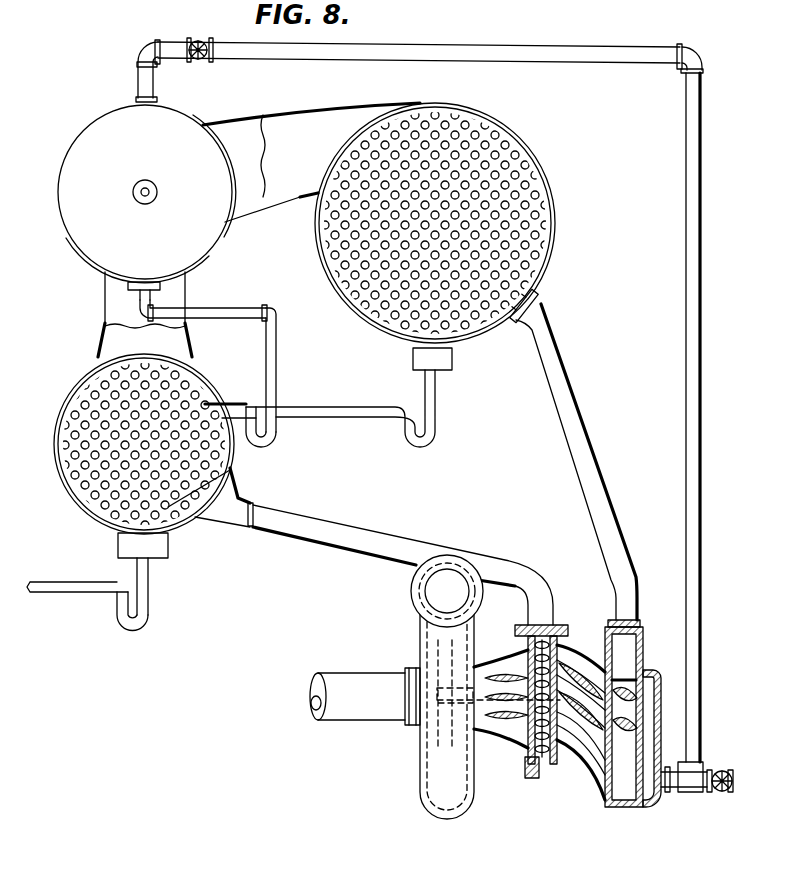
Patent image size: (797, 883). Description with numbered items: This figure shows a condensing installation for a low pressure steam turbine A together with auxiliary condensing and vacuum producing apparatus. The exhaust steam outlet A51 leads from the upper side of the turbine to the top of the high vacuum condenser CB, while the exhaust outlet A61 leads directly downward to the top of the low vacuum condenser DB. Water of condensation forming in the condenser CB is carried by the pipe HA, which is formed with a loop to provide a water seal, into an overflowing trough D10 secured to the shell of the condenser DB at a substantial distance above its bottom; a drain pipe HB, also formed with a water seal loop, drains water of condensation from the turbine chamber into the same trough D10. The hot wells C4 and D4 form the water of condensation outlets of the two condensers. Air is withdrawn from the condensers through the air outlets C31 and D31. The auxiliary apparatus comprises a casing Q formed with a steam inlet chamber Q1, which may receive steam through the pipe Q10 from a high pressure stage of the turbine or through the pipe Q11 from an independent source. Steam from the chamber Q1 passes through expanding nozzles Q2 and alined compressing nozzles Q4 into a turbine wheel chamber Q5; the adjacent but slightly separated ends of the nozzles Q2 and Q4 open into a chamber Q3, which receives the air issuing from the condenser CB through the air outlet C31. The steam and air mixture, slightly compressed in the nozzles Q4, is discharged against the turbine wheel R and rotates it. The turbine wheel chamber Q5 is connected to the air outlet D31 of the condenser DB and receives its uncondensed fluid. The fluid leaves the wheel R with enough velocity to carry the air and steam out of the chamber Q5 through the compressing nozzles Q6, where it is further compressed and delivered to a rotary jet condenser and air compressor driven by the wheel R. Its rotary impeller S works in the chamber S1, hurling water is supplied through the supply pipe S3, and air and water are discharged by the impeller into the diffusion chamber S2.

The low pressure steam turbine A is at (147, 194).
The exhaust steam outlet A51 is at (311, 162).
The exhaust outlet A61 is at (127, 340).
The condenser CB is at (553, 218).
The air outlet C31 is at (543, 312).
The hot well C4 is at (413, 356).
The condenser DB is at (53, 437).
The overflowing trough D10 is at (205, 396).
The air outlet D31 is at (226, 493).
The hot well D4 is at (118, 580).
The pipe HA is at (337, 420).
The drain pipe HB is at (277, 365).
The pipe Q10 is at (685, 517).
The turbine wheel chamber Q5 is at (553, 646).
The chamber Q3 is at (630, 650).
The steam inlet chamber Q1 is at (653, 793).
The casing Q is at (612, 807).
The expanding nozzles Q2 is at (613, 753).
The compressing nozzles Q4 is at (583, 740).
The compressing nozzles Q6 is at (502, 728).
The pipe Q11 is at (707, 793).
The turbine wheel R is at (543, 767).
The rotary impeller S is at (437, 740).
The chamber S1 is at (454, 655).
The diffusion chamber S2 is at (432, 597).
The supply pipe S3 is at (368, 680).